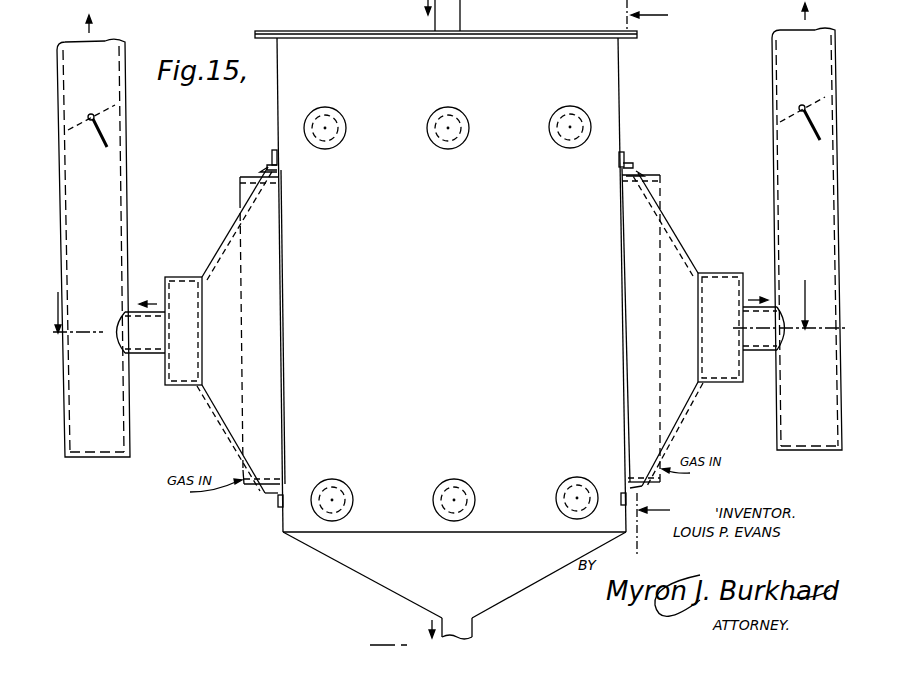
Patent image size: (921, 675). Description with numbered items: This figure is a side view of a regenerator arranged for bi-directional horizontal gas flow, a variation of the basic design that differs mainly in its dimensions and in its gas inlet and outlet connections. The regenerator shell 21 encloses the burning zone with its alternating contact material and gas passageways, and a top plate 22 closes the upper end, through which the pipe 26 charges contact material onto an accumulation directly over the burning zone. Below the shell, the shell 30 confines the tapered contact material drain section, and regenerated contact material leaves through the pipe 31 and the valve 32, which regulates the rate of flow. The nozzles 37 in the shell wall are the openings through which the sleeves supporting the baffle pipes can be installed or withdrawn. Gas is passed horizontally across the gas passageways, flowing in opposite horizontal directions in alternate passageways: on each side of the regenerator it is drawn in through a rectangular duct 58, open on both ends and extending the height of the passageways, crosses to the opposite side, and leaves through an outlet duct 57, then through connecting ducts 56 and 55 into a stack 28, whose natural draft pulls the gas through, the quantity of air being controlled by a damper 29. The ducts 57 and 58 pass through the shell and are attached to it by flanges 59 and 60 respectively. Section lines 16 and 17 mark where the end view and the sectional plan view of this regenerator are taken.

The section line 16— 16 is at (665, 278).
The section line 17— 17 is at (450, 306).
The regenerator shell 21 is at (608, 70).
The top plate 22 is at (572, 29).
The pipe 26 is at (457, 13).
The stack 28 is at (125, 168).
The damper 29 is at (94, 117).
The shell 30 is at (378, 583).
The pipe 31 is at (476, 624).
The valve 32 is at (714, 6).
The nozzles 37 is at (337, 135).
The connecting duct 55 is at (152, 355).
The connecting duct 56 is at (180, 276).
The outlet duct 57 is at (227, 231).
The rectangular duct 58 is at (240, 182).
The flange 59 is at (274, 157).
The flange 60 is at (268, 172).